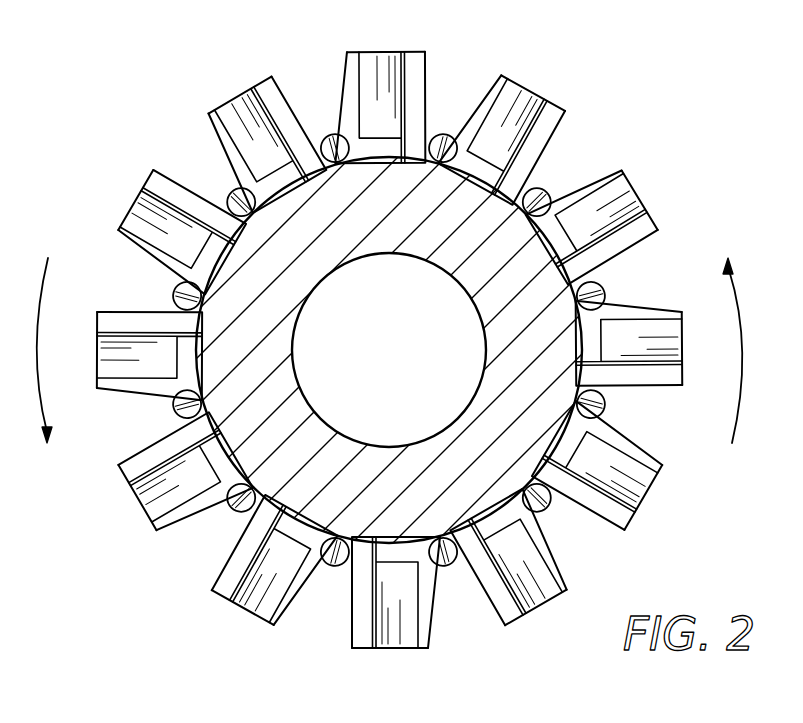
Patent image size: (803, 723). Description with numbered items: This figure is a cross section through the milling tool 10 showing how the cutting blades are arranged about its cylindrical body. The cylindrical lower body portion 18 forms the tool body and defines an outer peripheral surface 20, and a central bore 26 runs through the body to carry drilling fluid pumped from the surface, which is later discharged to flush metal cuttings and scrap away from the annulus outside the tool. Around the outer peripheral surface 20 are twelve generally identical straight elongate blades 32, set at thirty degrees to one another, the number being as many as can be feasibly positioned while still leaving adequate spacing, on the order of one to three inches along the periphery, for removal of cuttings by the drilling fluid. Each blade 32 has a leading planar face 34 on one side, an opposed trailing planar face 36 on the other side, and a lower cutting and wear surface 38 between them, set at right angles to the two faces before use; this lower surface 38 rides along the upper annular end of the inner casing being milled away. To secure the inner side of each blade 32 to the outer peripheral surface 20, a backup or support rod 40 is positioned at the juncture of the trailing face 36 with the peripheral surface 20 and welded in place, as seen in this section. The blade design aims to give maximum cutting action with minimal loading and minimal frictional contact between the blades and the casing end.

The milling tool 10 is at (660, 117).
The cylindrical lower body portion 18 is at (470, 196).
The outer peripheral surface 20 is at (548, 241).
The central bore 26 is at (294, 339).
The blade 32 is at (380, 72).
The leading planar face 34 is at (368, 52).
The trailing planar face 36 is at (425, 72).
The lower cutting and wear surface 38 is at (415, 105).
The backup or support rod 40 is at (328, 136).